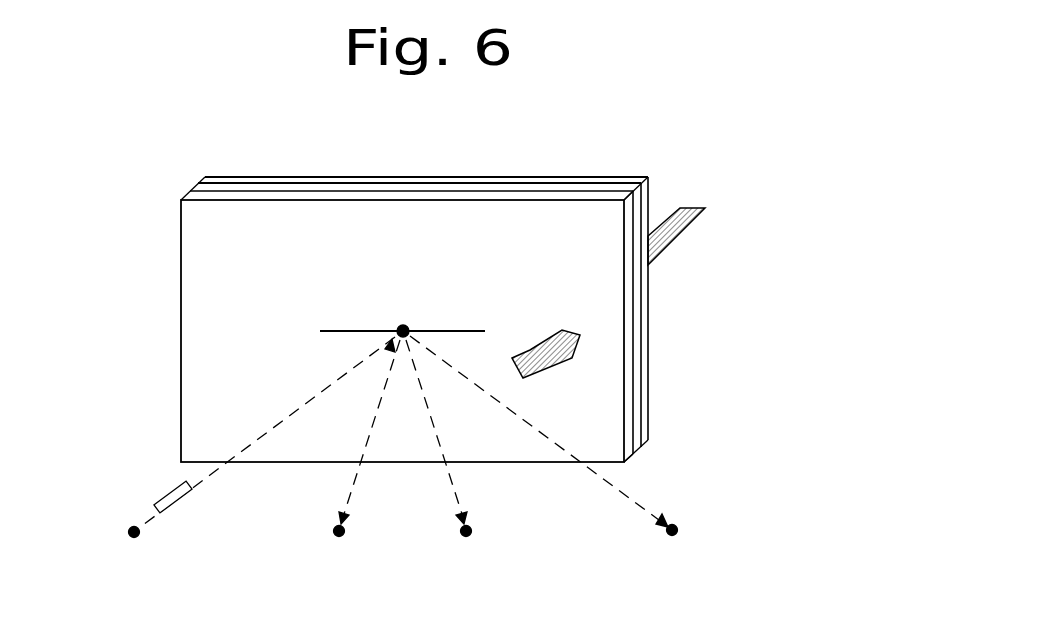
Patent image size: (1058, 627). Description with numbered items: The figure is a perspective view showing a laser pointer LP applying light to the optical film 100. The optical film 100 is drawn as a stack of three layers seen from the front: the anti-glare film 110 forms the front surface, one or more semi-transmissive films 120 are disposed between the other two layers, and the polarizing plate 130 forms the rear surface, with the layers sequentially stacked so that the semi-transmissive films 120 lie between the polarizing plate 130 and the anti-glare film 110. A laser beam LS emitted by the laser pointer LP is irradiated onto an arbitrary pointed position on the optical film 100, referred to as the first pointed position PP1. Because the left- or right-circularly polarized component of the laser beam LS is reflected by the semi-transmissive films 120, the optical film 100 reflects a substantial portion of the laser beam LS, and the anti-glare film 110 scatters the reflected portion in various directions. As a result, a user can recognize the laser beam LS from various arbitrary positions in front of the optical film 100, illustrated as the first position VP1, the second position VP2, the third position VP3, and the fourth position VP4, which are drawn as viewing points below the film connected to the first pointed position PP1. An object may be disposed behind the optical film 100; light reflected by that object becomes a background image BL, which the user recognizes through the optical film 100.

The optical film 100 is at (686, 142).
The anti-glare film 110 is at (628, 375).
The semi-transmissive films 120 is at (637, 330).
The polarizing plate 130 is at (643, 283).
The background image BL is at (690, 218).
The first pointed position PP1 is at (401, 326).
The laser beam LS is at (252, 440).
The laser pointer LP is at (171, 488).
The first position VP1 is at (135, 549).
The second position VP2 is at (361, 455).
The third position VP3 is at (446, 455).
The fourth position VP4 is at (550, 453).